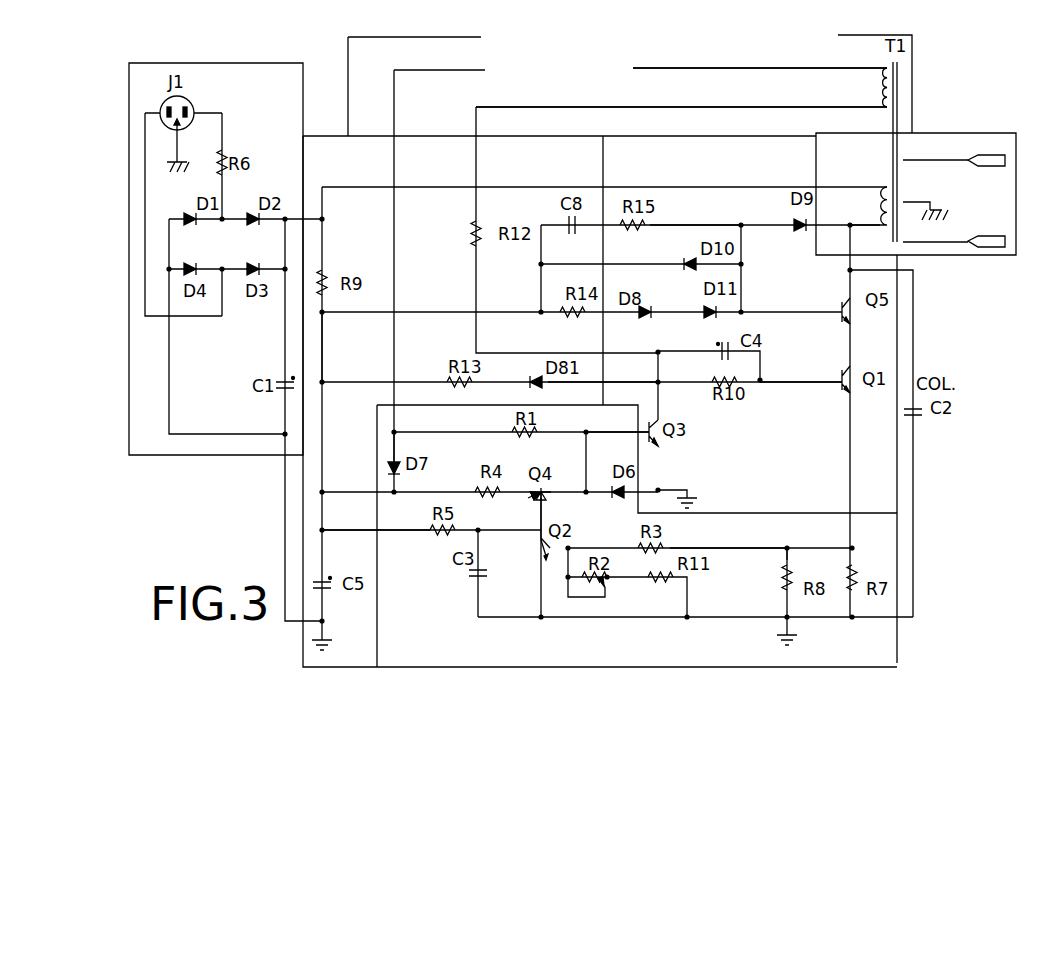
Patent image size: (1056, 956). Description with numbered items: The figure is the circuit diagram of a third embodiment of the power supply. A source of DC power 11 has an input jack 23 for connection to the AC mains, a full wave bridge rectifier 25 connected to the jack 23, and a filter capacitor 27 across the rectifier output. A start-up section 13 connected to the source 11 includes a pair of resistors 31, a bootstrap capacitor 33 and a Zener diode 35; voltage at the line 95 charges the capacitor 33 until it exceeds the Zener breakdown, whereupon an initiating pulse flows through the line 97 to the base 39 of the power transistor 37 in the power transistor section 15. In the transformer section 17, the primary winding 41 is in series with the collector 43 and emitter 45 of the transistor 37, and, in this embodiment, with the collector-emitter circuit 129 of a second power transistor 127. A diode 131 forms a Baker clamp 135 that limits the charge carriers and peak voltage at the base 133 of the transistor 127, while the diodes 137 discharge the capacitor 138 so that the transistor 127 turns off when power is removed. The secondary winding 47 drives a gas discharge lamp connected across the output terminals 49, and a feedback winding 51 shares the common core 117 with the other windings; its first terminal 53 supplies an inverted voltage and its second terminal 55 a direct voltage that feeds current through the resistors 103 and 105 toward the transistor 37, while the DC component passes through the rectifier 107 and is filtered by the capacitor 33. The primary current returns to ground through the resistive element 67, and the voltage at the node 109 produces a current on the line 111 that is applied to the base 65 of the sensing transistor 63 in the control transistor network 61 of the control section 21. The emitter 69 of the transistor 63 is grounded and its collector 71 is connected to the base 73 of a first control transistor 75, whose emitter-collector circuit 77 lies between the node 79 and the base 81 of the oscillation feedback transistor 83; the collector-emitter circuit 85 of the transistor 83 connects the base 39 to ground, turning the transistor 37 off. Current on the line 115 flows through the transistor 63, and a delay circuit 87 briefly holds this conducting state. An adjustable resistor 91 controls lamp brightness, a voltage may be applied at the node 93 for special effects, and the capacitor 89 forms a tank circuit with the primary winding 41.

The source of DC power 11 is at (305, 82).
The start-up section 13 is at (308, 140).
The power transistor section 15 is at (899, 366).
The transformer section 17 is at (860, 138).
The control section 21 is at (380, 645).
The input jack 23 is at (187, 98).
The full wave bridge rectifier 25 is at (238, 217).
The filter capacitor 27 is at (283, 396).
The pair of resistors 31 is at (325, 298).
The bootstrap capacitor 33 is at (330, 592).
The Zener diode 35 is at (530, 382).
The power transistor 37 is at (836, 390).
The base of the power transistor 39 is at (783, 378).
The primary winding 41 is at (884, 191).
The collector of the power transistor 43 is at (851, 365).
The emitter of the power transistor 45 is at (852, 396).
The secondary winding 47 is at (903, 164).
The output terminals 49 is at (970, 240).
The feedback winding 51 is at (893, 77).
The first terminal 53 is at (812, 69).
The second terminal 55 is at (848, 108).
The control transistor network 61 is at (452, 586).
The sensing transistor 63 is at (538, 541).
The base of the sensing transistor 65 is at (613, 547).
The resistive element 67 is at (846, 572).
The emitter of the sensing transistor 69 is at (540, 572).
The collector of the sensing transistor 71 is at (545, 540).
The base of the first control transistor 73 is at (540, 520).
The first control transistor 75 is at (522, 500).
The emitter-collector circuit 77 is at (553, 478).
The node 79 is at (400, 490).
The base of the oscillation feedback transistor 81 is at (616, 432).
The oscillation feedback transistor 83 is at (640, 440).
The collector-emitter circuit 85 is at (667, 408).
The delay circuit 87 is at (445, 540).
The capacitor 89 is at (918, 418).
The adjustable resistor 91 is at (608, 582).
The node 93 is at (572, 548).
The line 95 is at (324, 349).
The line 97 is at (578, 387).
The resistor 103 is at (480, 252).
The resistor 105 is at (722, 378).
The rectifier 107 is at (382, 468).
The node 109 is at (787, 546).
The line 111 is at (728, 547).
The line 115 is at (384, 530).
The common core 117 is at (898, 120).
The second power transistor 127 is at (830, 322).
The collector-emitter circuit 129 is at (862, 317).
The diode 131 is at (796, 229).
The base of the second power transistor 133 is at (760, 310).
The Baker clamp 135 is at (736, 216).
The diodes 137 is at (683, 262).
The capacitor 138 is at (570, 232).